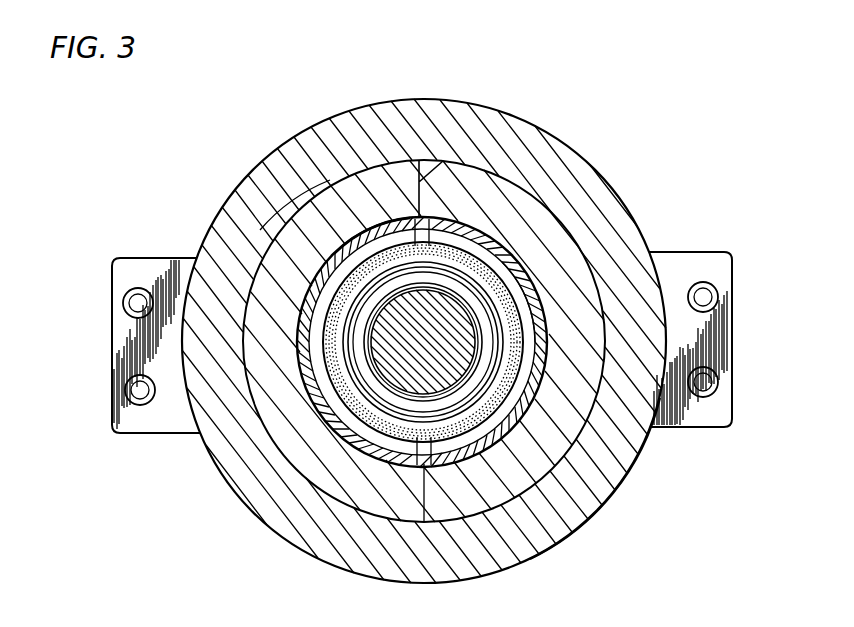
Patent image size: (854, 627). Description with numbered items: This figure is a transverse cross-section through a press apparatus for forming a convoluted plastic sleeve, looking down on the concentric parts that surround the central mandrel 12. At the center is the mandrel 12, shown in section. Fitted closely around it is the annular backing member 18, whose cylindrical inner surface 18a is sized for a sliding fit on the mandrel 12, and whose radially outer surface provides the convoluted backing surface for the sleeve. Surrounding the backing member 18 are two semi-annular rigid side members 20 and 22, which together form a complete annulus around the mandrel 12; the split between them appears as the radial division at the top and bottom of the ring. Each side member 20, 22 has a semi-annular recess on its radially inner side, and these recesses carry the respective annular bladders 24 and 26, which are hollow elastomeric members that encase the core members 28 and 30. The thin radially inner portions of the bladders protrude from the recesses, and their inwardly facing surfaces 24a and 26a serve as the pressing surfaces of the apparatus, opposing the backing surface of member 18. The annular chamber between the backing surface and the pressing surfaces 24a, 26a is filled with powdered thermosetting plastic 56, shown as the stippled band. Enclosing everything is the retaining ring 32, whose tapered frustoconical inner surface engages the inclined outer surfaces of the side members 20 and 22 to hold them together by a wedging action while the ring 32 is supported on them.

The mandrel 12 is at (436, 342).
The annular backing member 18 is at (360, 352).
The cylindrical inner surface 18a is at (463, 397).
The semi-annular rigid side member 20 is at (535, 450).
The semi-annular rigid side member 22 is at (317, 462).
The annular bladder 24 is at (528, 264).
The pressing surface 24a is at (620, 477).
The annular bladder 26 is at (378, 462).
The pressing surface 26a is at (353, 223).
The core member 28 is at (457, 237).
The core member 30 is at (317, 247).
The retaining ring 32 is at (558, 158).
The powdered thermosetting plastic 56 is at (540, 303).